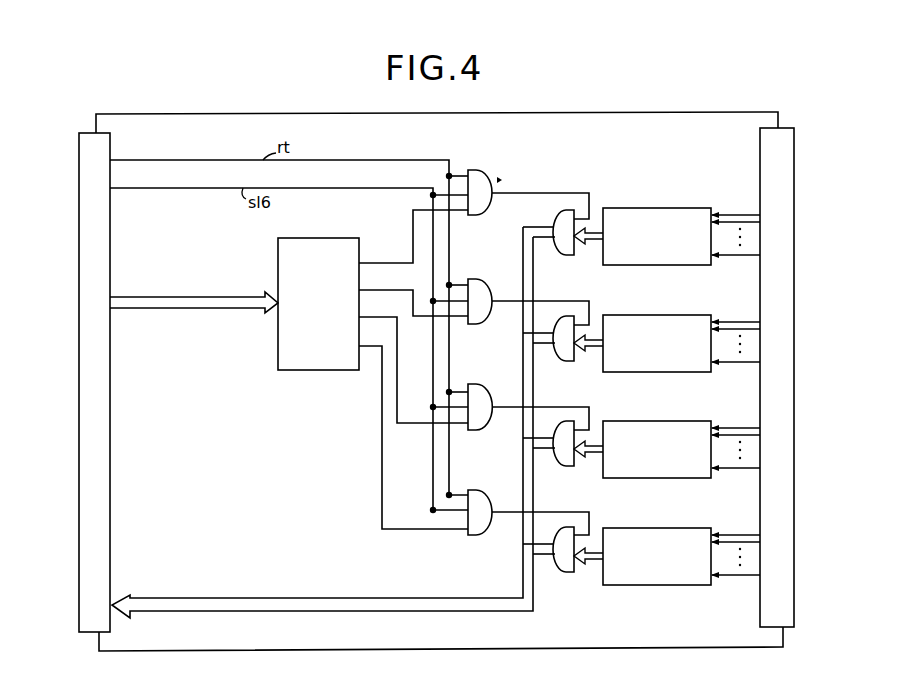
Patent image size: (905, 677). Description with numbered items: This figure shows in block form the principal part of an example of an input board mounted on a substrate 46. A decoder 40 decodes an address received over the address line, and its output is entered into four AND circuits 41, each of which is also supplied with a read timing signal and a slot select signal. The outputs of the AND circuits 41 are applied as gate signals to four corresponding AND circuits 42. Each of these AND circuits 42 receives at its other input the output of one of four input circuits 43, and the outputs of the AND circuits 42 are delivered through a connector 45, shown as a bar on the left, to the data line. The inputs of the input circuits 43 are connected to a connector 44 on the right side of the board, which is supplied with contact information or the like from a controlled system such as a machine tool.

The decoder 40 is at (318, 371).
The AND circuits 41 is at (482, 172).
The AND circuits 42 is at (557, 255).
The input circuits 43 is at (662, 208).
The connector 44 is at (795, 164).
The connector 45 is at (78, 173).
The substrate 46 is at (655, 112).